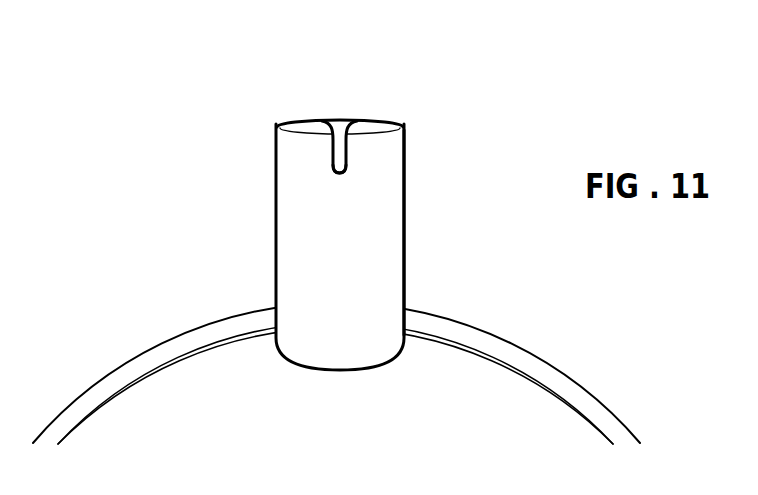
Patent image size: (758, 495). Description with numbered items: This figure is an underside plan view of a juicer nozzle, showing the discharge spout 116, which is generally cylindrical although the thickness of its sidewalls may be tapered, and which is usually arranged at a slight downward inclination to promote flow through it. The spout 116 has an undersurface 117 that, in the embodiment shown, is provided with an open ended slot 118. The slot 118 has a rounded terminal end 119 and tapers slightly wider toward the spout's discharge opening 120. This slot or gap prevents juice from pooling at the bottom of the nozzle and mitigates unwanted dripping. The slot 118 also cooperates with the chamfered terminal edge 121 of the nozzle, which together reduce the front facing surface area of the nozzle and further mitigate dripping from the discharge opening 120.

The discharge spout 116 is at (380, 163).
The undersurface 117 is at (367, 200).
The open ended slot 118 is at (333, 152).
The rounded terminal end 119 is at (340, 178).
The discharge opening 120 is at (360, 117).
The chamfered terminal edge 121 is at (280, 133).